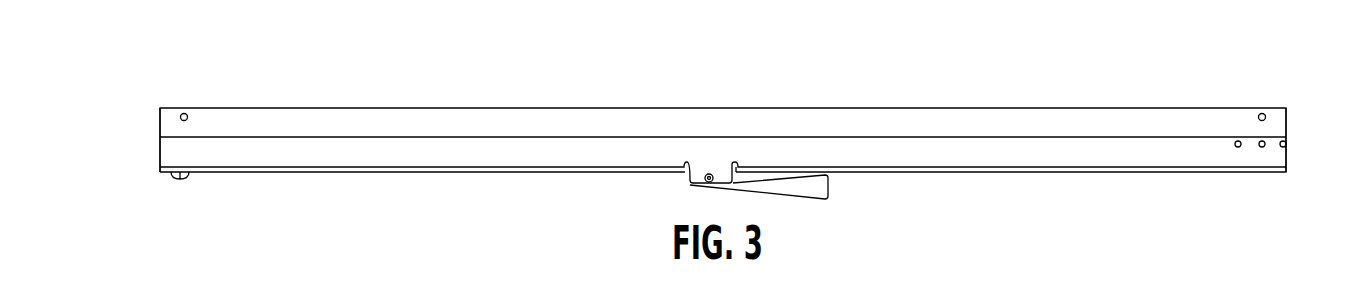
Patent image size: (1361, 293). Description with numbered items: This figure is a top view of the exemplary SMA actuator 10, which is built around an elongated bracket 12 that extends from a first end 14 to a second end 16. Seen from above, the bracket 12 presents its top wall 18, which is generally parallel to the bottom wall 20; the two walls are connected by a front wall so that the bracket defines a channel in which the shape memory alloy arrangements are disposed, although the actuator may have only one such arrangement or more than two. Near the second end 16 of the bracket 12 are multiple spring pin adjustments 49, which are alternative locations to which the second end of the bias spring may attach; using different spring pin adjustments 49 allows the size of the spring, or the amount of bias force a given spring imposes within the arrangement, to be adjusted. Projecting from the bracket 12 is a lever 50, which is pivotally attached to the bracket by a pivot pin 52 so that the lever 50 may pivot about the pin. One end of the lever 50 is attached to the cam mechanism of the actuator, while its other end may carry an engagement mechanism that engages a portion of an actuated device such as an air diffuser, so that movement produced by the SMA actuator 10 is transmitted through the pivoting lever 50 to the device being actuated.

The SMA actuator 10 is at (1247, 60).
The bracket 12 is at (293, 108).
The first end 14 is at (159, 152).
The second end 16 is at (1287, 153).
The top wall 18 is at (356, 156).
The bottom wall 20 is at (441, 121).
The spring pin adjustments 49 is at (1238, 147).
The lever 50 is at (803, 190).
The pivot pin 52 is at (708, 183).